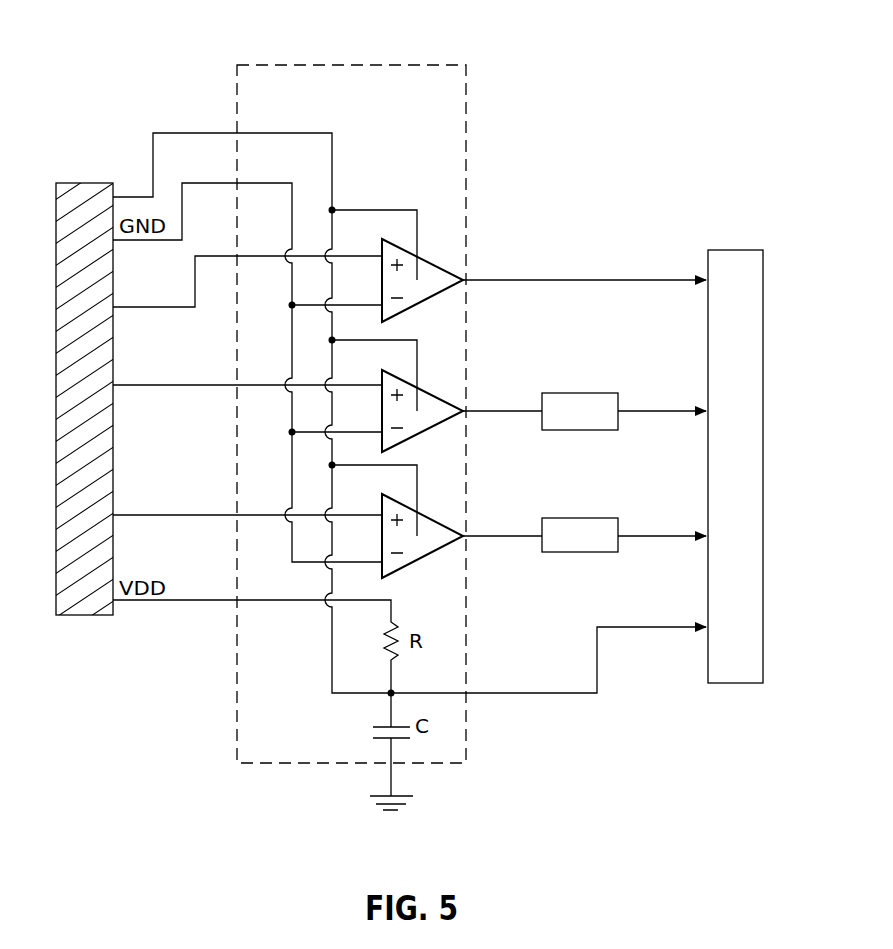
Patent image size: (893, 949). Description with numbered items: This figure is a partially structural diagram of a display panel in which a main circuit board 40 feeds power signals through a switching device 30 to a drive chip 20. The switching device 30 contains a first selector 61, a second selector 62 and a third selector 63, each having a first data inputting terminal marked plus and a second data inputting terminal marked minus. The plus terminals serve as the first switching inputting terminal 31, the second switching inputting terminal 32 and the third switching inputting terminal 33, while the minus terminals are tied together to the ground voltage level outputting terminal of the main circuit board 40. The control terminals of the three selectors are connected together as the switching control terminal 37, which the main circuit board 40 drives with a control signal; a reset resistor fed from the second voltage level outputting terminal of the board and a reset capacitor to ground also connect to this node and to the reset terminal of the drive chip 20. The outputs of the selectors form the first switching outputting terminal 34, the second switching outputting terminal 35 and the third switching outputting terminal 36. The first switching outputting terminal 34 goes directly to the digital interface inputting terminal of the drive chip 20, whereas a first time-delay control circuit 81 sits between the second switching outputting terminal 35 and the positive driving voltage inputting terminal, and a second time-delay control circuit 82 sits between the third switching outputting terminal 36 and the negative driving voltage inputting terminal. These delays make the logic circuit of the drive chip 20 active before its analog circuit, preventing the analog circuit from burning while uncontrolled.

The drive chip 20 is at (735, 250).
The switching device 30 is at (458, 64).
The first switching inputting terminal 31 is at (247, 267).
The second switching inputting terminal 32 is at (247, 370).
The third switching inputting terminal 33 is at (247, 500).
The first switching outputting terminal 34 is at (584, 267).
The second switching outputting terminal 35 is at (584, 397).
The third switching outputting terminal 36 is at (584, 523).
The switching control terminal 37 is at (409, 397).
The main circuit board 40 is at (88, 616).
The first selector 61 is at (432, 262).
The second selector 62 is at (432, 392).
The third selector 63 is at (432, 516).
The first time-delay control circuit 81 is at (572, 393).
The second time-delay control circuit 82 is at (572, 518).